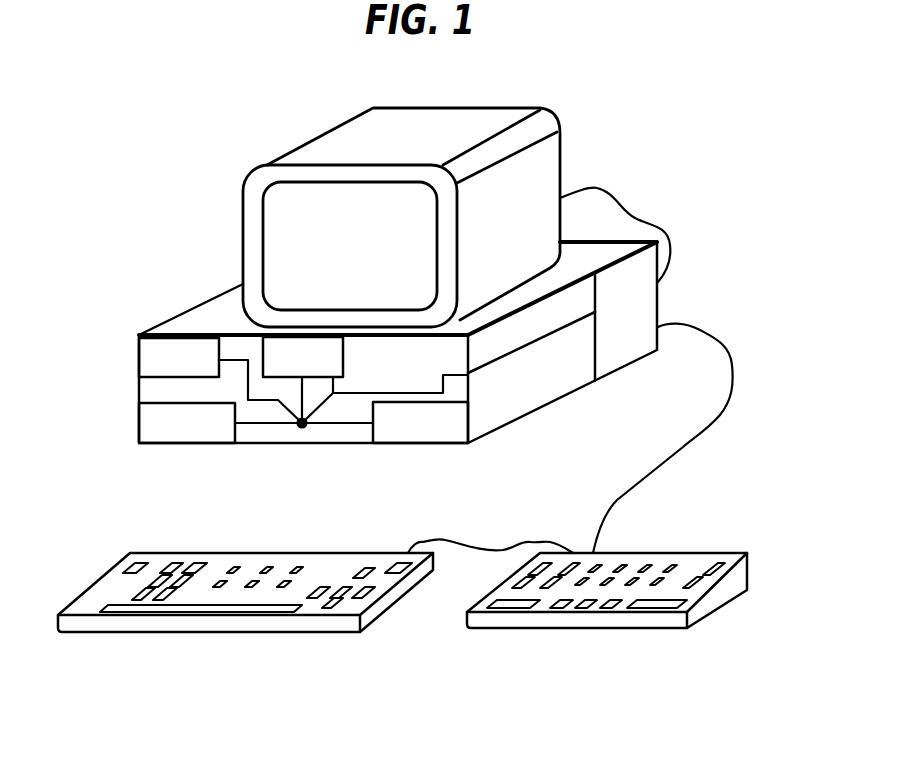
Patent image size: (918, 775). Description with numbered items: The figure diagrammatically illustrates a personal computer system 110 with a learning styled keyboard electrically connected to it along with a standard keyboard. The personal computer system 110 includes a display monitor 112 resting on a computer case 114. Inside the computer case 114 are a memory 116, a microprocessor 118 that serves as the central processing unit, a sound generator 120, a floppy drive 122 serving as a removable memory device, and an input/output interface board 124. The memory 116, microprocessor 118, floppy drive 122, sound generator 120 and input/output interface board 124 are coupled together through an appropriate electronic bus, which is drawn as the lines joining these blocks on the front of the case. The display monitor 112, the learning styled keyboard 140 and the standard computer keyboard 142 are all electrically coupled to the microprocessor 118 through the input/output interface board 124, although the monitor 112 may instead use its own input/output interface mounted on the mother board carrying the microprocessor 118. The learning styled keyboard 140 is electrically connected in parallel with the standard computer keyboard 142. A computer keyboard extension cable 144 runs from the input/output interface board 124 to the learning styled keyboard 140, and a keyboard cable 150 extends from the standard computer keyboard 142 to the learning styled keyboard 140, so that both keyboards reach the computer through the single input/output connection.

The personal computer system 110 is at (354, 356).
The display monitor 112 is at (242, 230).
The computer case 114 is at (500, 438).
The memory 116 is at (210, 447).
The microprocessor 118 is at (333, 380).
The sound generator 120 is at (137, 362).
The floppy drive 122 is at (403, 445).
The input/output interface board 124 is at (620, 370).
The learning styled keyboard 140 is at (747, 553).
The standard computer keyboard 142 is at (240, 553).
The computer keyboard extension cable 144 is at (683, 447).
The keyboard cable 150 is at (447, 537).